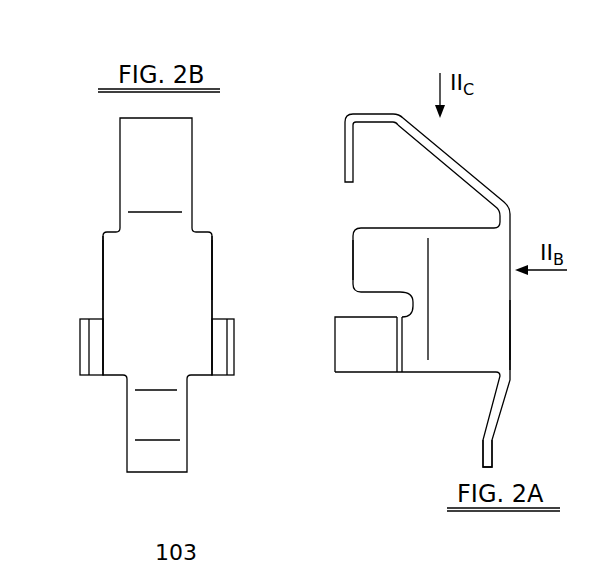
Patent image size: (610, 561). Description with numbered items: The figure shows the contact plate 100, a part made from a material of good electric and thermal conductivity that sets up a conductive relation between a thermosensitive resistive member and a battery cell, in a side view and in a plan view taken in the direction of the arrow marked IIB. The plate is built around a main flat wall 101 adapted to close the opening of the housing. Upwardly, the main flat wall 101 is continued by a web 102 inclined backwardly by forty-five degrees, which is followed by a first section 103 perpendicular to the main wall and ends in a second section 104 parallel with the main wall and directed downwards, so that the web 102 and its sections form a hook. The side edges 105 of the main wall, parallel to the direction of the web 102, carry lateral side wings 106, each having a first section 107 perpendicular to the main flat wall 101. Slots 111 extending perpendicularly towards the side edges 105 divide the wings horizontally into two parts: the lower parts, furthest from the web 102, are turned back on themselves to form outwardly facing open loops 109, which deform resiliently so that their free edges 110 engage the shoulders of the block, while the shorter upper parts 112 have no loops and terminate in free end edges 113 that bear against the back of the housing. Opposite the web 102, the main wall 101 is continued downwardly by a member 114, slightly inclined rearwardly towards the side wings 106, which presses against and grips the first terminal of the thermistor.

In FIG. 2B, the contact plate 100 is at (205, 148).
In FIG. 2A, the contact plate 100 is at (522, 203).
In FIG. 2B, the main flat wall 101 is at (187, 257).
In FIG. 2A, the main flat wall 101 is at (494, 307).
In FIG. 2B, the web 102 is at (137, 162).
In FIG. 2A, the web 102 is at (458, 168).
In FIG. 2A, the first section 103 is at (373, 116).
In FIG. 2A, the second section 104 is at (350, 166).
In FIG. 2B, the side edges 105 is at (103, 282).
In FIG. 2A, the lateral side wings 106 is at (462, 365).
In FIG. 2A, the first section 107 is at (493, 343).
In FIG. 2A, the loops 109 is at (353, 358).
In FIG. 2B, the free edges 110 is at (85, 352).
In FIG. 2A, the free edges 110 is at (412, 365).
In FIG. 2A, the slots 111 is at (346, 303).
In FIG. 2A, the upper parts 112 is at (385, 238).
In FIG. 2A, the free end edges 113 is at (353, 268).
In FIG. 2B, the member 114 is at (167, 424).
In FIG. 2A, the member 114 is at (493, 422).